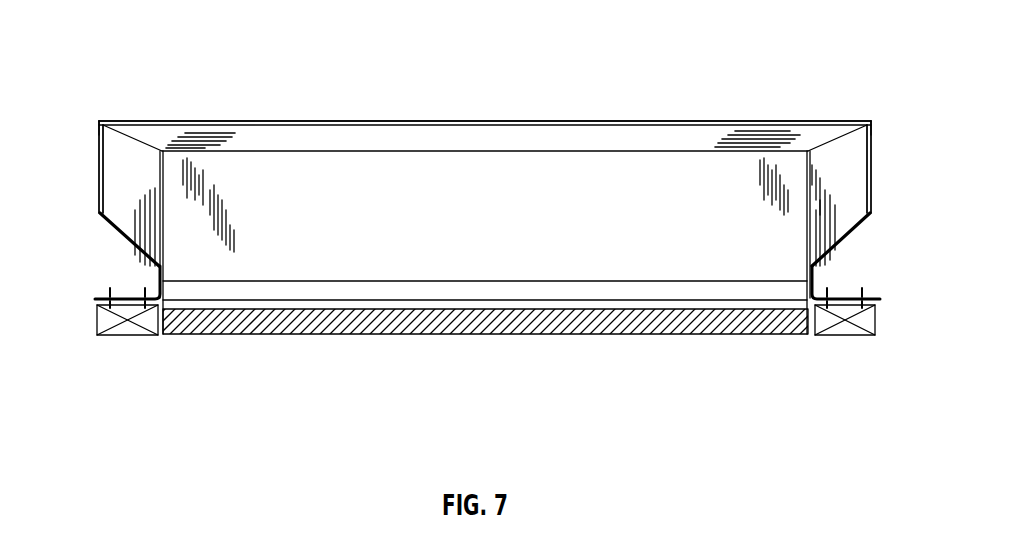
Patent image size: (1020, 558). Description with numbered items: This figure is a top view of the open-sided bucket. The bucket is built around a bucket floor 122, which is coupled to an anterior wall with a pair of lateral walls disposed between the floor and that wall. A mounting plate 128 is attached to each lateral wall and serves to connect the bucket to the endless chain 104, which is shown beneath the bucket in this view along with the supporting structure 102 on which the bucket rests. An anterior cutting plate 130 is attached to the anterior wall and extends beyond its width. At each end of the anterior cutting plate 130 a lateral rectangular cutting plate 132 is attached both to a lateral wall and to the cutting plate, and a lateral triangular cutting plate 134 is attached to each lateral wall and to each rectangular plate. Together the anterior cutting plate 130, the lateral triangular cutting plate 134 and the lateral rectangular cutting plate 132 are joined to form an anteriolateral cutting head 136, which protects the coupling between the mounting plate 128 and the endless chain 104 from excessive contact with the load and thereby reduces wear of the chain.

The base / floor slab 102 is at (623, 335).
The endless chain 104 is at (137, 337).
The bucket floor 122 is at (357, 212).
The mounting plate 128 is at (95, 298).
The anterior cutting plate 130 is at (468, 120).
The lateral rectangular cutting plate 132 is at (128, 155).
The lateral triangular cutting plate 134 is at (130, 222).
The anteriolateral cutting head 136 is at (100, 117).